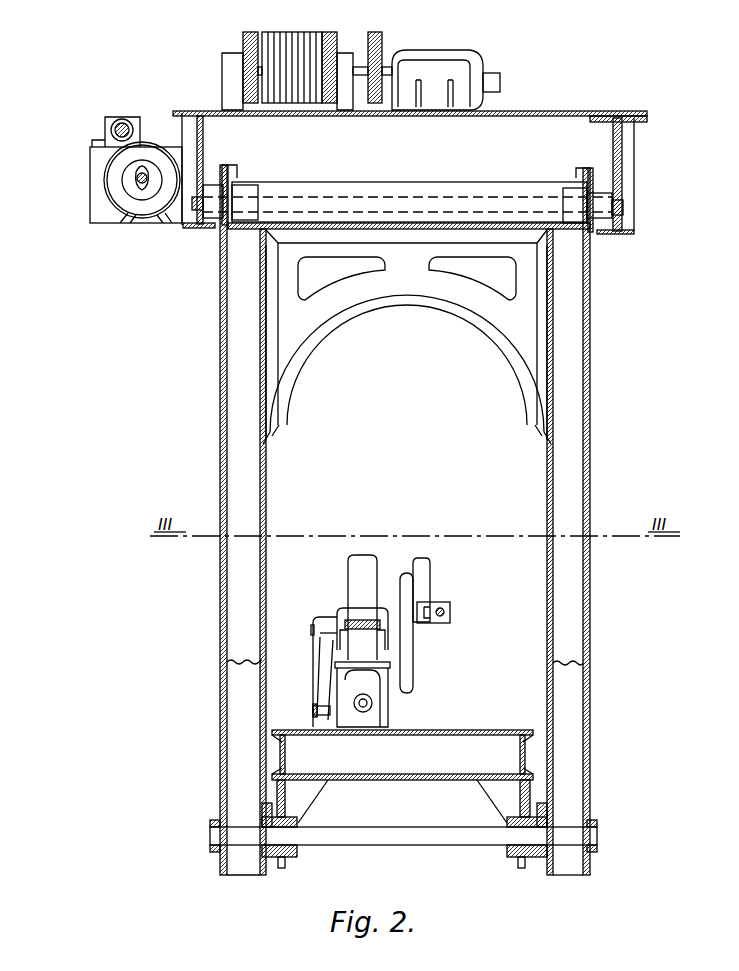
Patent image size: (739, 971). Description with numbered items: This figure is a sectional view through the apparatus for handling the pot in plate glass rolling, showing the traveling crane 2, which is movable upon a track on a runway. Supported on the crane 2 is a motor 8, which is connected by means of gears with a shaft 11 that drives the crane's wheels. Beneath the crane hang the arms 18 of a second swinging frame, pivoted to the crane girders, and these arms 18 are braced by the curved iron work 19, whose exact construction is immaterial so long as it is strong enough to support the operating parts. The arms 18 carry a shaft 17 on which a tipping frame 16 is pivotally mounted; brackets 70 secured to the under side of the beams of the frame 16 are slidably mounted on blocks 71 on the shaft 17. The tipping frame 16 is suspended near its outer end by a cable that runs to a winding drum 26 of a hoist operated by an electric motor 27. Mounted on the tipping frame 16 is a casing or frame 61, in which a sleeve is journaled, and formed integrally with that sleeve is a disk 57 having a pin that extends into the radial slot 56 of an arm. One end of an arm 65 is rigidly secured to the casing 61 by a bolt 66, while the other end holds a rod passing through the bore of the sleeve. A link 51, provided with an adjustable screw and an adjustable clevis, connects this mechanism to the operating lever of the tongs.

The traveling crane 2 is at (622, 159).
The motor 8 is at (138, 202).
The shaft 11 is at (118, 131).
The tipping frame 16 is at (402, 755).
The shaft 17 is at (367, 833).
The arms 18 is at (248, 458).
The curved iron work 19 is at (407, 337).
The winding drum 26 is at (287, 38).
The electric motor 27 is at (430, 62).
The link 51 is at (450, 614).
The radial slot 56 is at (425, 588).
The disk 57 is at (412, 658).
The casing or frame 61 is at (358, 586).
The arm 65 is at (322, 673).
The bolt 66 is at (315, 710).
The brackets 70 is at (323, 785).
The blocks 71 is at (298, 848).